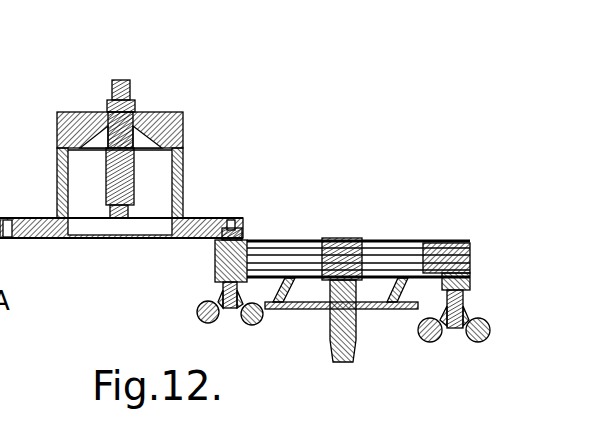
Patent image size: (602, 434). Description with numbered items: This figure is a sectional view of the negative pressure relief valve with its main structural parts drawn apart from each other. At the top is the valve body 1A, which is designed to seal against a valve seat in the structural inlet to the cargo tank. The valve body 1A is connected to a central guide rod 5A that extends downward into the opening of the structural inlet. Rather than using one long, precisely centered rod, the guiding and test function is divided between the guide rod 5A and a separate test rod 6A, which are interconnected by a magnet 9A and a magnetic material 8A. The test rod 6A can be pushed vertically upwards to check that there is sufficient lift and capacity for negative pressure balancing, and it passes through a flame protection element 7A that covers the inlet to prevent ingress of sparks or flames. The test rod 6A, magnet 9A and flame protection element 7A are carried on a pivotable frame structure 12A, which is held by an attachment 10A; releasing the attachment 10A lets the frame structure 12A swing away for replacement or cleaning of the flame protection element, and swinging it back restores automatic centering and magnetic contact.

The valve body 1A is at (183, 126).
The central guide rod 5A is at (134, 162).
The magnetic material 8A is at (128, 240).
The attachment 10A is at (218, 278).
The magnet 9A is at (360, 240).
The test rod 6A is at (357, 330).
The flame protection element 7A is at (424, 243).
The frame structure 12A is at (473, 262).